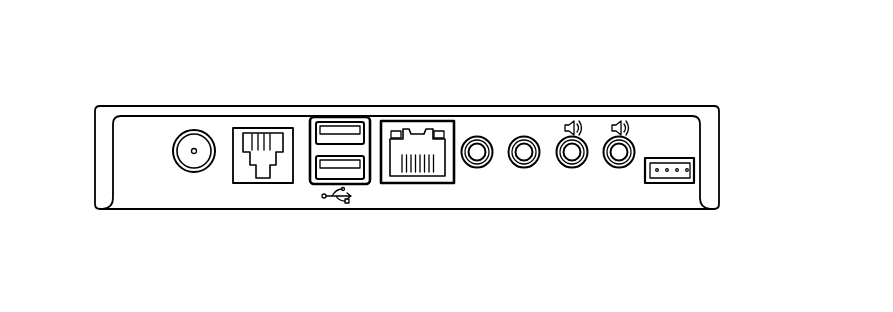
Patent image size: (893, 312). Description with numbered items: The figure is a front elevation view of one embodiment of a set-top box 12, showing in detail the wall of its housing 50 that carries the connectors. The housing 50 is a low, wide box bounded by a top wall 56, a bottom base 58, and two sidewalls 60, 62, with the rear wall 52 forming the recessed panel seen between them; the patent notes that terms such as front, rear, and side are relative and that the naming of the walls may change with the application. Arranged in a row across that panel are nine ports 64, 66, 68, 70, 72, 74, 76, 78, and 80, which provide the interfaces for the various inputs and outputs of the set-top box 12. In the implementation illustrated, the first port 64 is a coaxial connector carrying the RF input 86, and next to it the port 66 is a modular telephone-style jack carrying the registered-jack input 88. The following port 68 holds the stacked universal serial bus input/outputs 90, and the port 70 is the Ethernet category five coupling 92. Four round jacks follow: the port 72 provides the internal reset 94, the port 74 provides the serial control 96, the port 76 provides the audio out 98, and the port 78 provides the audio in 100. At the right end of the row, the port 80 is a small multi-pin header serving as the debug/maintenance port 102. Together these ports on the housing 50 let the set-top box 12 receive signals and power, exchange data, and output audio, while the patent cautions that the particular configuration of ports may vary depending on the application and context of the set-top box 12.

The set-top box 12 is at (101, 92).
The housing 50 is at (703, 104).
The rear wall 52 is at (133, 197).
The top wall 56 is at (164, 106).
The bottom base 58 is at (282, 210).
The sidewall 60 is at (720, 148).
The sidewall 62 is at (94, 150).
The port 64 is at (197, 130).
The port 66 is at (268, 128).
The port 68 is at (349, 117).
The port 70 is at (420, 121).
The port 72 is at (478, 137).
The port 74 is at (525, 137).
The port 76 is at (573, 137).
The port 78 is at (620, 137).
The port 80 is at (670, 184).
The RF input 86 is at (194, 173).
The RJ-45 input 88 is at (243, 184).
The universal serial bus (USB) input/outputs 90 is at (333, 186).
The Ethernet category 5 (Cat 5) coupling 92 is at (418, 184).
The internal reset 94 is at (478, 168).
The RS232 control 96 is at (525, 168).
The audio out 98 is at (573, 168).
The audio in 100 is at (620, 168).
The debug/maintenance port 102 is at (694, 174).